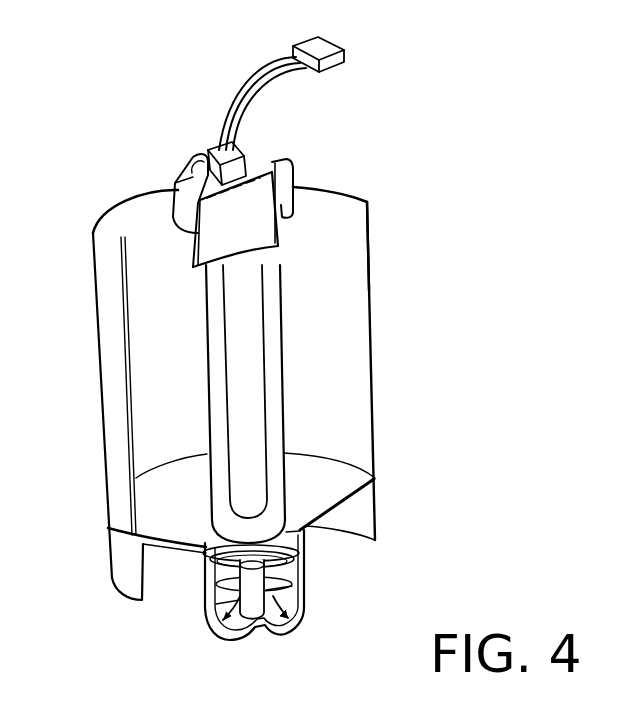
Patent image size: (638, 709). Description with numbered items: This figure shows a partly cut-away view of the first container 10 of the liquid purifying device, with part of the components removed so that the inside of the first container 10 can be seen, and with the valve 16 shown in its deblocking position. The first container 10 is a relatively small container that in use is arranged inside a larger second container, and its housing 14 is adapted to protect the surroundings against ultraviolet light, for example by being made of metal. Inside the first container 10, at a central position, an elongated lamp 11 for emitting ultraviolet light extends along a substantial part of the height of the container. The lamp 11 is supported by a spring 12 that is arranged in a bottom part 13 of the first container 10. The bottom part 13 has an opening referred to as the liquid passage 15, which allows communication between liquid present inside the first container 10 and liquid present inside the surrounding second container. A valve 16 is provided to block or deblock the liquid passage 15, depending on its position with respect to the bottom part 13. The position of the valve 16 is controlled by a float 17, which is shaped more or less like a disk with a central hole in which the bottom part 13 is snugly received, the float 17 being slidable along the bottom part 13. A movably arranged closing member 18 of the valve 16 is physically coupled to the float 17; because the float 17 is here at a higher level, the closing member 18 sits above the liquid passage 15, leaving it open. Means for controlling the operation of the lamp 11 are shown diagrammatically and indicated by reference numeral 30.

The first container 10 is at (374, 360).
The lamp 11 is at (270, 305).
The spring 12 is at (345, 500).
The bottom part 13 is at (305, 550).
The housing 14 is at (372, 262).
The liquid passage 15 is at (271, 609).
The valve 16 is at (218, 555).
The float 17 is at (120, 553).
The closing member 18 is at (218, 555).
The means for controlling the operation of the lamp 30 is at (344, 57).